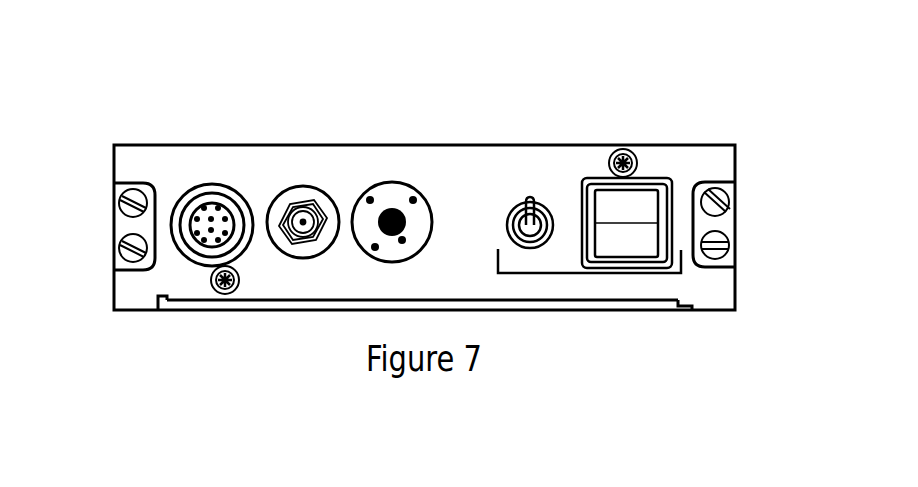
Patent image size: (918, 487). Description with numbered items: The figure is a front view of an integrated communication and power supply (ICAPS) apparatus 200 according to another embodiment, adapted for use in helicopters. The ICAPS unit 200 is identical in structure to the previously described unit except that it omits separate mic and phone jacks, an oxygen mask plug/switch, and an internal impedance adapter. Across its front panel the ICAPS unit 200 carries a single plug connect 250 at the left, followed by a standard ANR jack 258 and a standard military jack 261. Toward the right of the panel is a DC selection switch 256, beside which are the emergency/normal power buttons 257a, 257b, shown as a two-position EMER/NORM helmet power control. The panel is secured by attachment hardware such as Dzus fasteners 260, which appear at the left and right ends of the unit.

The integrated communication and power supply (ICAPS) apparatus 200 is at (175, 98).
The single plug connect 250 is at (198, 242).
The DC selection switch 256 is at (537, 226).
The emergency power button 257a is at (651, 200).
The normal power button 257b is at (650, 248).
The standard ANR jack 258 is at (293, 198).
The Dzus fasteners 260 is at (118, 200).
The standard military U-174/U jack 261 is at (390, 200).